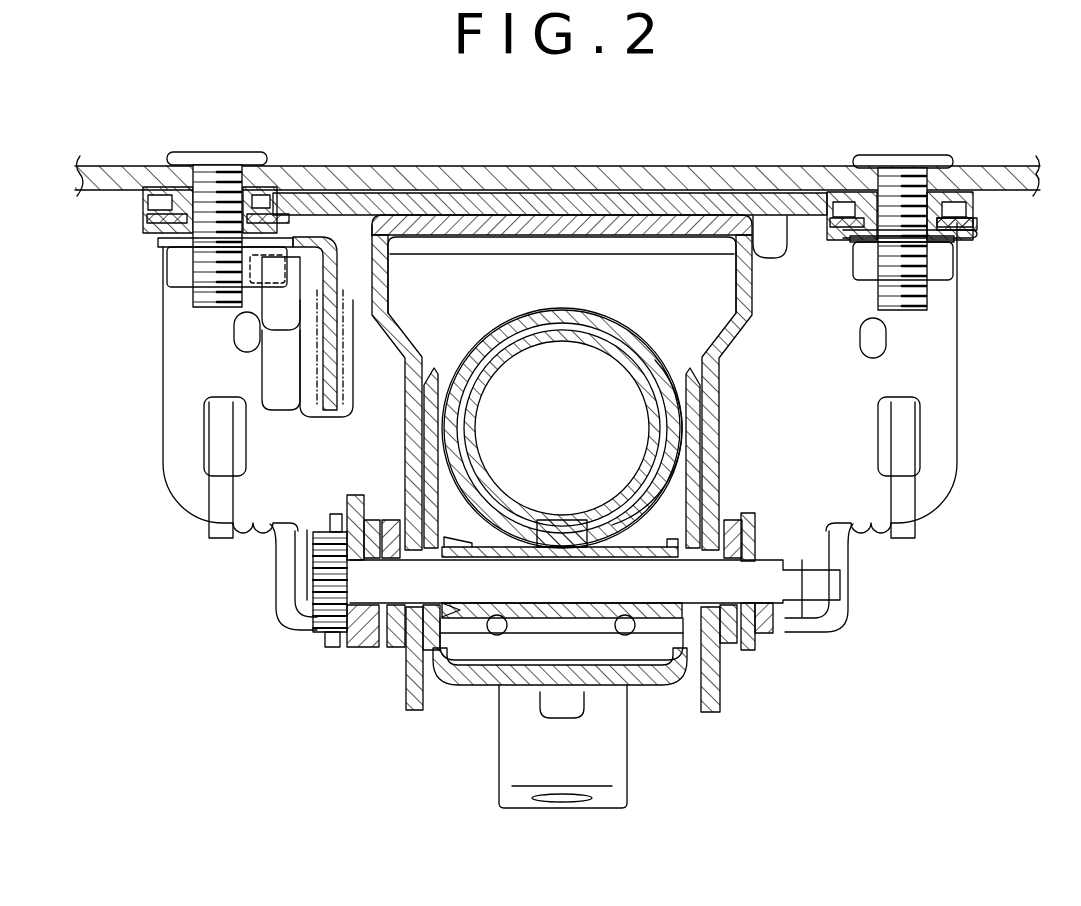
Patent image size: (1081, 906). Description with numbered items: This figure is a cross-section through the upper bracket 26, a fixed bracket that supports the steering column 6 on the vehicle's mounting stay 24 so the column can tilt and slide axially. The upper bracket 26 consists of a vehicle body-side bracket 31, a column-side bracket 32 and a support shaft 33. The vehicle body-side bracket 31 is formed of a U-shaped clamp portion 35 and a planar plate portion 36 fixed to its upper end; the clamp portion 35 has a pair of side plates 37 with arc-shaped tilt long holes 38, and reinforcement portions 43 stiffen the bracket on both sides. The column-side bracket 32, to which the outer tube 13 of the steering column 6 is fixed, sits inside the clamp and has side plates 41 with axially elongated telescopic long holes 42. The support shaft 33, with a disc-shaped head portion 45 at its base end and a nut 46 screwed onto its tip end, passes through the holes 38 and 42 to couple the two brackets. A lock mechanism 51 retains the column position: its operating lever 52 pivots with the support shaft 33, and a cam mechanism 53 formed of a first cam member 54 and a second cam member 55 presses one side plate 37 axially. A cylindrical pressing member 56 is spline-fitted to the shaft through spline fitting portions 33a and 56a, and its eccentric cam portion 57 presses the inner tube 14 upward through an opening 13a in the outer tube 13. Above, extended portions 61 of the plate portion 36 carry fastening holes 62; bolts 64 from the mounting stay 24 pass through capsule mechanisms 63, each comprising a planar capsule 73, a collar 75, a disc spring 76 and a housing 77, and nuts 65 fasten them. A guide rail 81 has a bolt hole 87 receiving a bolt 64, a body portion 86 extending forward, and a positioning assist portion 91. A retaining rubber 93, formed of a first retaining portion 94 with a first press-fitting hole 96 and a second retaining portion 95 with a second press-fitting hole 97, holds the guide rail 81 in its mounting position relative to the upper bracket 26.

The steering column 6 is at (632, 322).
The outer tube 13 is at (580, 312).
The opening 13a is at (590, 500).
The inner tube 14 is at (525, 328).
The mounting stay 24 is at (1027, 178).
The upper bracket 26 is at (737, 184).
The vehicle body-side bracket 31 is at (550, 161).
The column-side bracket 32 is at (445, 688).
The support shaft 33 is at (322, 532).
The spline fitting portion 33a is at (590, 619).
The clamp portion 35 is at (548, 225).
The plate portion 36 is at (610, 206).
The side plates 37 is at (402, 430).
The tilt long holes 38 is at (395, 526).
The side plates 41 is at (430, 380).
The telescopic long holes 42 is at (430, 561).
The reinforcement portions 43 is at (175, 388).
The head portion 45 is at (333, 640).
The nut 46 is at (748, 627).
The lock mechanism 51 is at (334, 617).
The operating lever 52 is at (350, 505).
The cam mechanism 53 is at (374, 699).
The first cam member 54 is at (362, 650).
The second cam member 55 is at (393, 648).
The pressing member 56 is at (530, 619).
The spline fitting portion 56a is at (548, 561).
The cam portion 57 is at (553, 535).
The extended portions 61 is at (320, 196).
The fastening hole 62 is at (268, 188).
The capsule mechanism 63 is at (545, 187).
The bolt 64 is at (165, 150).
The nut 65 is at (940, 272).
The capsule 73 is at (963, 192).
The collar 75 is at (842, 239).
The disc spring 76 is at (957, 241).
The housing 77 is at (978, 226).
The guide rail 81 is at (320, 206).
The body portion 86 is at (352, 383).
The bolt hole 87 is at (190, 252).
The positioning assist portion 91 is at (258, 272).
The retaining rubber 93 is at (258, 392).
The first retaining portion 94 is at (281, 373).
The second retaining portion 95 is at (262, 358).
The first press-fitting hole 96 is at (338, 290).
The second press-fitting hole 97 is at (234, 318).